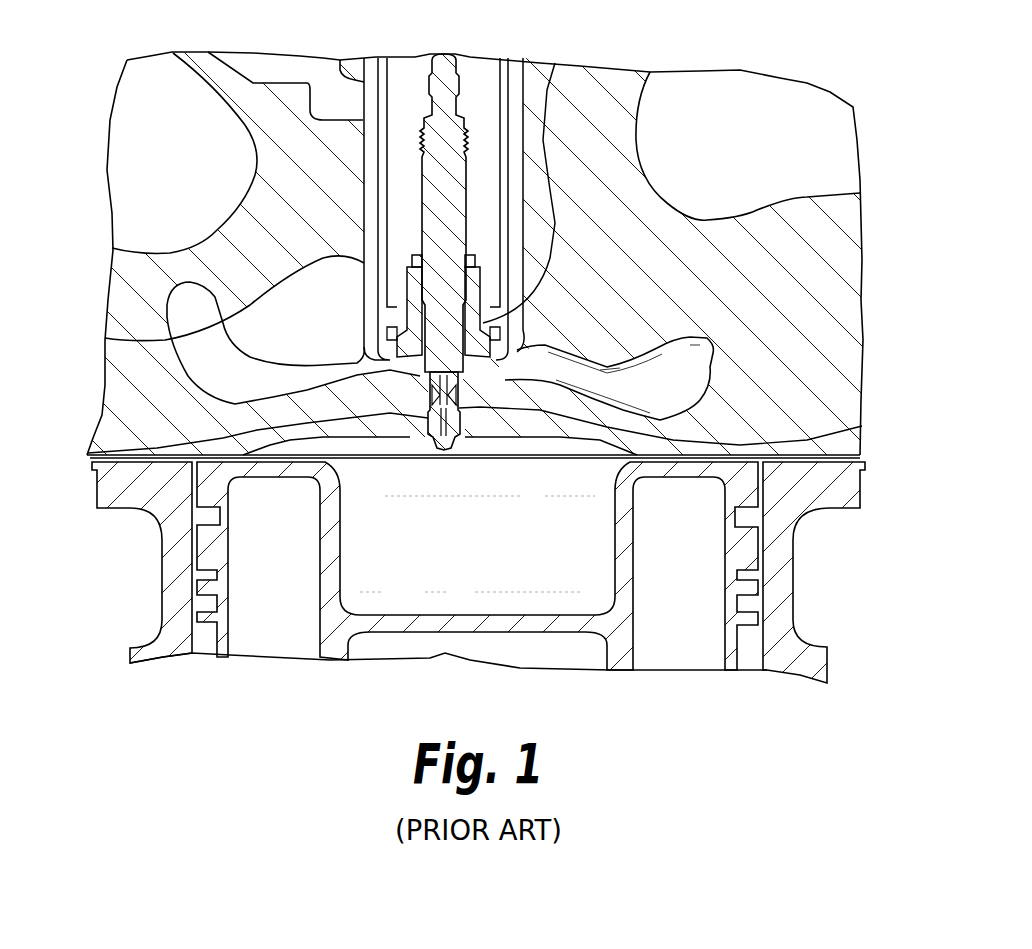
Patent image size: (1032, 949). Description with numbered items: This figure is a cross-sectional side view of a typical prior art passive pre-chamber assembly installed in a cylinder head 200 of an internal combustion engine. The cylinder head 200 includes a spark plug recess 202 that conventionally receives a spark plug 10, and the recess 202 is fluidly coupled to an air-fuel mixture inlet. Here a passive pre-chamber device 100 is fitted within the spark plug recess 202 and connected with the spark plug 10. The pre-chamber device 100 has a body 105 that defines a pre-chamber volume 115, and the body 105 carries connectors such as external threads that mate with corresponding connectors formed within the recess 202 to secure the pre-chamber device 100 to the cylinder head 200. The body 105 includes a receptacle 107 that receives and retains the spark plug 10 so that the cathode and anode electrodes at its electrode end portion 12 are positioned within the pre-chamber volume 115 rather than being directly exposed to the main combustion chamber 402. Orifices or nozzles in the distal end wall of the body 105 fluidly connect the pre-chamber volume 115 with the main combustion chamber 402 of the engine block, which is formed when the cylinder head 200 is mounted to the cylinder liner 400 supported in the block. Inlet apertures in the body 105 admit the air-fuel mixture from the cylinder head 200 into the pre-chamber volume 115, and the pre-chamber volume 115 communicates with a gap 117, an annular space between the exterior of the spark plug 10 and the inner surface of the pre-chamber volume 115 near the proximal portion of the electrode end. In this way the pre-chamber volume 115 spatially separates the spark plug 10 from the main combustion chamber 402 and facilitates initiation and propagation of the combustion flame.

The spark plug 10 is at (428, 200).
The electrode end portion 12 is at (262, 400).
The passive pre-chamber device 100 is at (88, 452).
The body 105 is at (105, 338).
The receptacle 107 is at (555, 63).
The pre-chamber volume 115 is at (443, 422).
The gap 117 is at (862, 426).
The cylinder head 200 is at (752, 291).
The spark plug recess 202 is at (472, 100).
The cylinder liner 400 is at (810, 660).
The main combustion chamber 402 is at (205, 640).